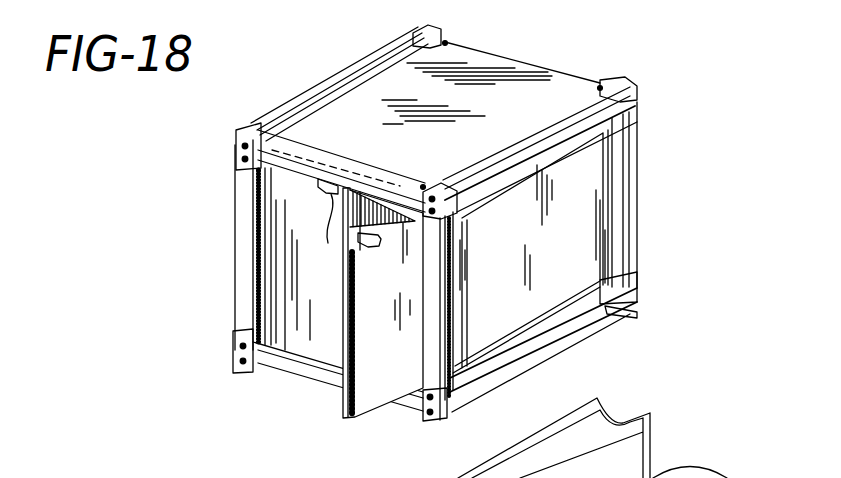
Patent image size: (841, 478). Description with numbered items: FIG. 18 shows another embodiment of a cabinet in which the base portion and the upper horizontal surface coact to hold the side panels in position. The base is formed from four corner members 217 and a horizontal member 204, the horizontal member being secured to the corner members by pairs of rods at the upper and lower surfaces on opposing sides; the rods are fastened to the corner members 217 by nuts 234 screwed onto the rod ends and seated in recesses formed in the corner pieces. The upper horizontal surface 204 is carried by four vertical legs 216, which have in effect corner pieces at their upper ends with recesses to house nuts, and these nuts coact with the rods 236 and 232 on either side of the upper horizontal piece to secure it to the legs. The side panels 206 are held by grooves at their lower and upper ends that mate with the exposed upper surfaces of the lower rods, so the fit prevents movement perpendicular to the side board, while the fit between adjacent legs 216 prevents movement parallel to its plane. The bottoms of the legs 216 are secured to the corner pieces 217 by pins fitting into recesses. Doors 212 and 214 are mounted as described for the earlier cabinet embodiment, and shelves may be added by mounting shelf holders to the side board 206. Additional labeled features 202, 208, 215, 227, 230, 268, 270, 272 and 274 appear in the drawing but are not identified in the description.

The louvered interior 202 is at (350, 252).
The horizontal member 204 is at (572, 86).
The side panel 206 is at (280, 203).
The right side panel 208 is at (587, 212).
The door 212 is at (327, 340).
The door 214 is at (355, 398).
The latch tab 215 is at (362, 244).
The vertical leg 216 is at (415, 31).
The corner member 217 is at (237, 368).
The slot 227 is at (292, 147).
The fastener 230 is at (430, 412).
The rod 232 is at (517, 143).
The nut 234 is at (241, 346).
The rod 236 is at (325, 87).
The fastener 268 is at (445, 204).
The fastener 270 is at (445, 215).
The fastener 272 is at (242, 146).
The fastener 274 is at (242, 160).